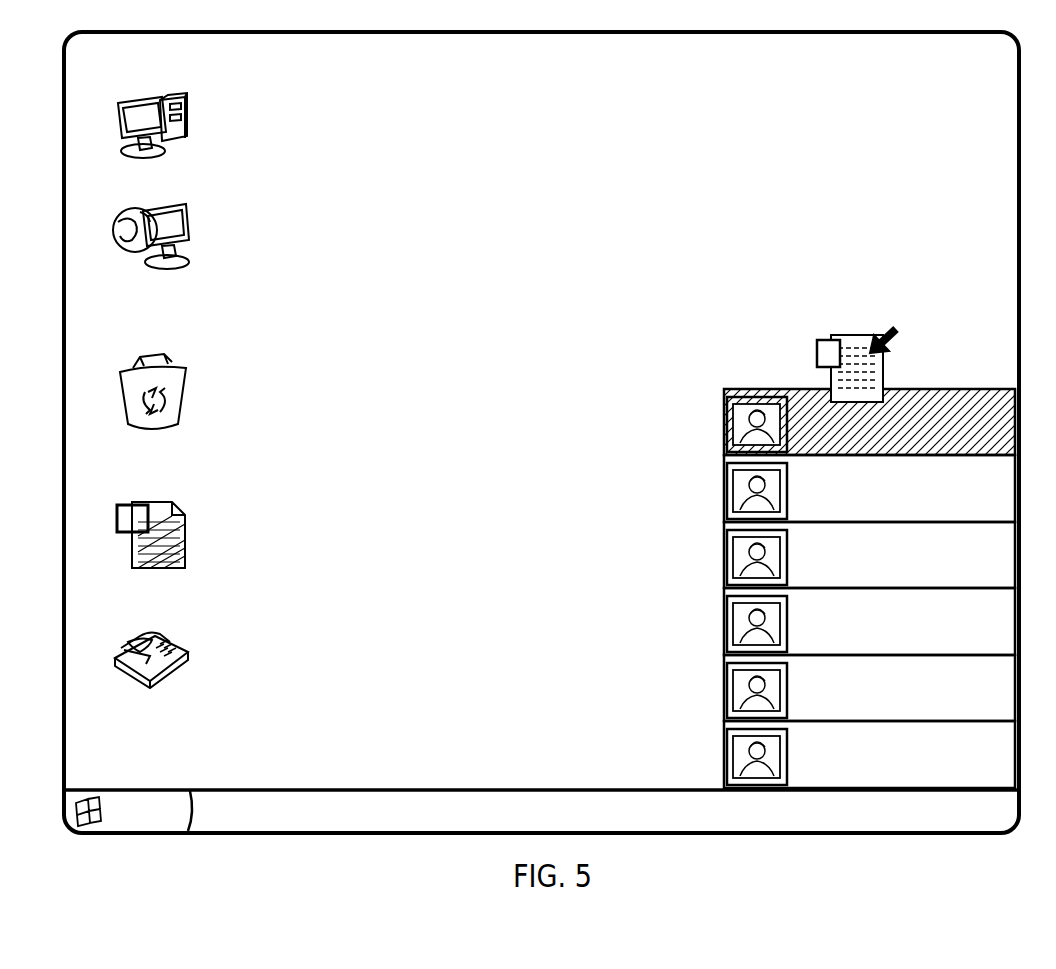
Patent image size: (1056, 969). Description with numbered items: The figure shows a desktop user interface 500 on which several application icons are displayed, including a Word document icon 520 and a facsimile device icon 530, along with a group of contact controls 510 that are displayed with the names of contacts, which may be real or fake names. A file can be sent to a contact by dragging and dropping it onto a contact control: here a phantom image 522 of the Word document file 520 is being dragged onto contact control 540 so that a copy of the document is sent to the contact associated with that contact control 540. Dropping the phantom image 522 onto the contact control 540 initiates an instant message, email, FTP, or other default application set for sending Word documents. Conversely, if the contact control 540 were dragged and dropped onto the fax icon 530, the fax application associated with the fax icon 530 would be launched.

The desktop user interface 500 is at (541, 432).
The contact controls 510 is at (828, 564).
The Word document icon 520 is at (186, 528).
The phantom image 522 is at (848, 334).
The facsimile device icon 530 is at (192, 661).
The contact control 540 is at (938, 393).